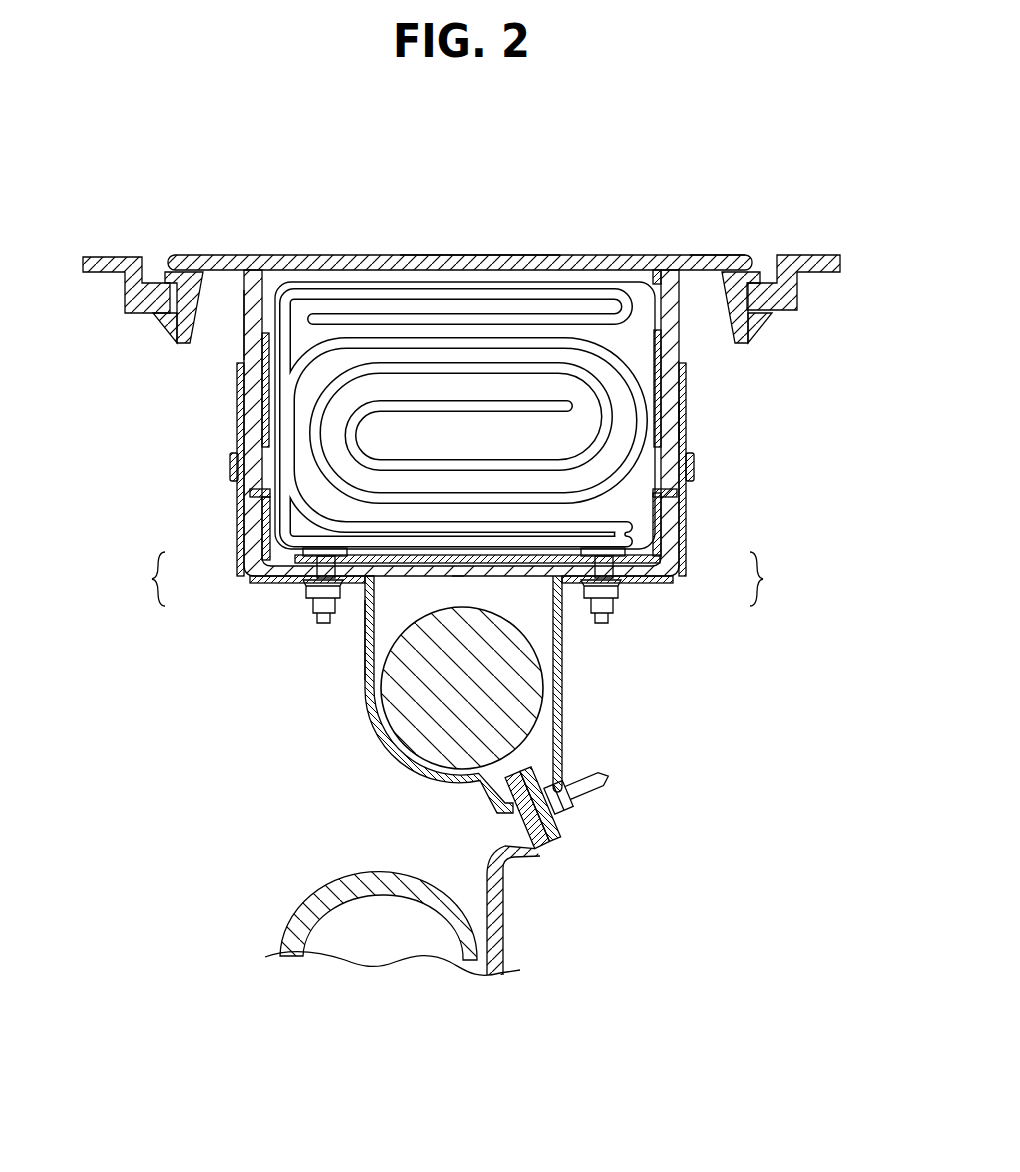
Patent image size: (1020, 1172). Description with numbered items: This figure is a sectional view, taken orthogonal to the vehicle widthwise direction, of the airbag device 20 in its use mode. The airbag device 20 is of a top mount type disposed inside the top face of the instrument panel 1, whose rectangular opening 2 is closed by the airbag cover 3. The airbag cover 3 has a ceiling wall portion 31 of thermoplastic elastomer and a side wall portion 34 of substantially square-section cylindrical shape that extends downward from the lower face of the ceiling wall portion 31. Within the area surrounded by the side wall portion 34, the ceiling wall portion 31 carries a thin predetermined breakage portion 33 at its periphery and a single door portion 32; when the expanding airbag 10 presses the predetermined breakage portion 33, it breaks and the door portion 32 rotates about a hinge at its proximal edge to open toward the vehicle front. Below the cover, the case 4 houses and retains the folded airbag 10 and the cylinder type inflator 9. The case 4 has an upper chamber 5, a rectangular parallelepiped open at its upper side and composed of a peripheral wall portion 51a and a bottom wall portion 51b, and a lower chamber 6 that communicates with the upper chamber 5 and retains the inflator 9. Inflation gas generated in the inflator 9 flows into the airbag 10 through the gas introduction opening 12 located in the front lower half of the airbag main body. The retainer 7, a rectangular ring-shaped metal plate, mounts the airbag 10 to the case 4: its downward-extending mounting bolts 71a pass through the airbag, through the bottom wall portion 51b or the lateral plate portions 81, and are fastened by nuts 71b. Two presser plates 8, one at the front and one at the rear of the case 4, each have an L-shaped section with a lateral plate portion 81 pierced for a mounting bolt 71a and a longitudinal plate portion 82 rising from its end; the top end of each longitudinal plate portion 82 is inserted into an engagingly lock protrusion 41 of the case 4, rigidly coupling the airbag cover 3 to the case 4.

The instrument panel 1 is at (96, 264).
The opening 2 is at (155, 267).
The airbag cover 3 is at (473, 217).
The ceiling wall portion 31 is at (701, 253).
The door portion 32 is at (482, 257).
The predetermined breakage portion 33 is at (655, 268).
The side wall portion 34 is at (238, 352).
The case 4 is at (569, 697).
The upper chamber 5 is at (668, 360).
The lower chamber 6 is at (388, 612).
The retainer 7 is at (640, 525).
The presser plate 8 is at (459, 547).
The lateral plate portion 81 is at (252, 588).
The longitudinal plate portion 82 is at (236, 547).
The inflator 9 is at (440, 720).
The airbag 10 is at (393, 292).
The gas introduction opening 12 is at (459, 580).
The airbag device 20 is at (770, 411).
The engagingly lock protrusion 41 is at (233, 467).
The peripheral wall portion 51a is at (238, 397).
The bottom wall portion 51b is at (268, 592).
The mounting bolt 71a is at (324, 632).
The nut 71b is at (312, 600).